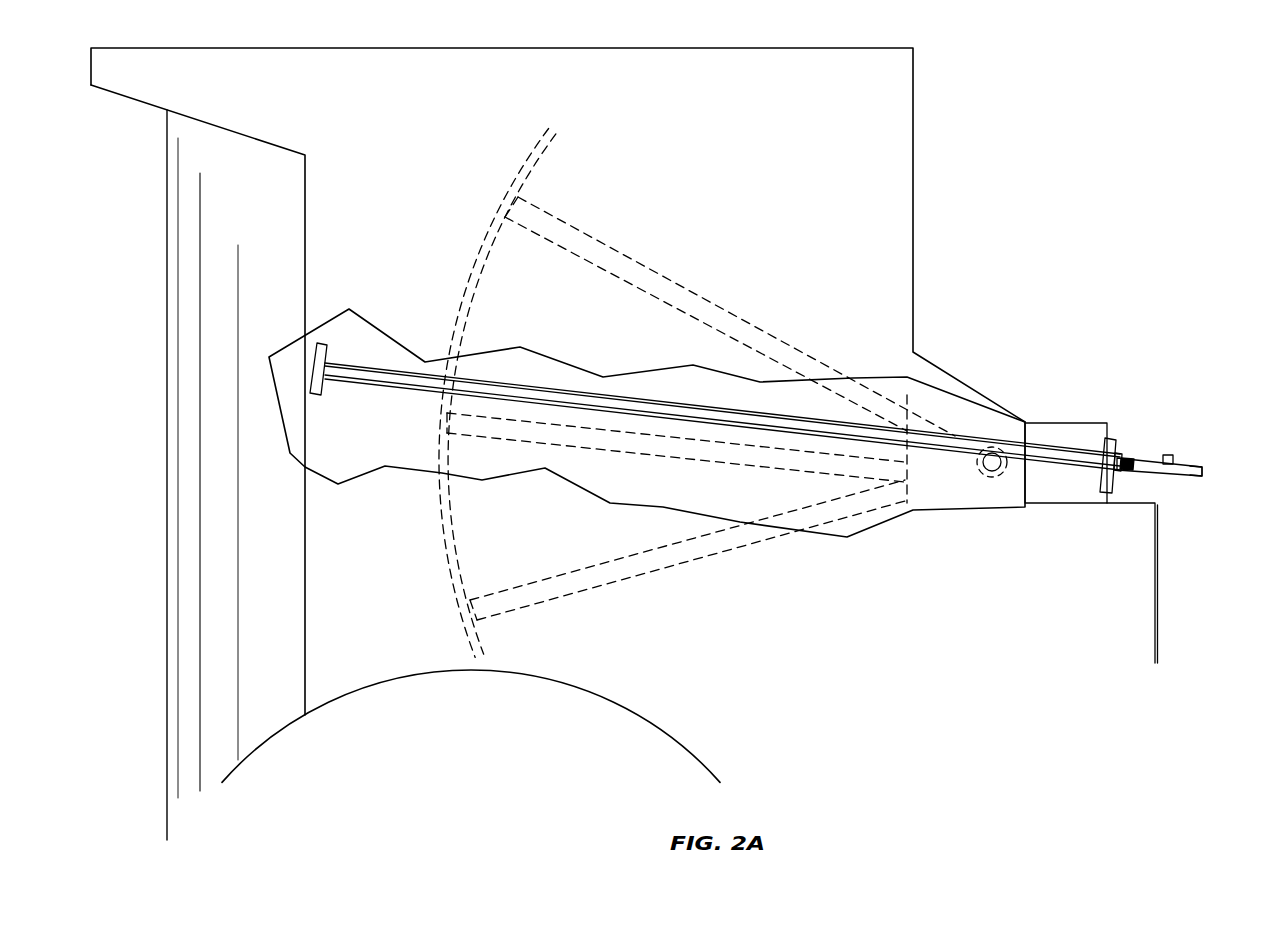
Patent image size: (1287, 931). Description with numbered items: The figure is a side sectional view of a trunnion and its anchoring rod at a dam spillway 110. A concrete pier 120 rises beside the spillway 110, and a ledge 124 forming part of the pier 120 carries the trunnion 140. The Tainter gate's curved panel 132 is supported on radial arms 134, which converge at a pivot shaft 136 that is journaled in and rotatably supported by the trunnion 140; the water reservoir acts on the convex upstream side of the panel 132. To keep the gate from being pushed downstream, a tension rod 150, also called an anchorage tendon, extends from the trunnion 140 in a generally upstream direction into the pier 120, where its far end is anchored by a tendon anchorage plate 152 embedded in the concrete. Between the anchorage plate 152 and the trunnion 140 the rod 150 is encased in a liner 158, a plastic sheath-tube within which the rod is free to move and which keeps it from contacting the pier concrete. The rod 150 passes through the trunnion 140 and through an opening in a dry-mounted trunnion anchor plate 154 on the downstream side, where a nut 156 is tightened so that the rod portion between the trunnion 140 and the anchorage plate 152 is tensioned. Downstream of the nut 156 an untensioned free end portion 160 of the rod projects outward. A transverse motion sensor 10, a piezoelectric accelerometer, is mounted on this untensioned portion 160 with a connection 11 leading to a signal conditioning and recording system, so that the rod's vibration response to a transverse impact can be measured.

The transverse motion sensor 10 is at (1178, 461).
The connection 11 is at (1173, 455).
The spillway 110 is at (695, 752).
The pier 120 is at (848, 141).
The ledge 124 is at (1137, 499).
The curved panel 132 is at (445, 300).
The radial arm 134 is at (800, 304).
The pivot shaft 136 is at (1016, 518).
The trunnion 140 is at (1087, 423).
The tension rod 150 is at (720, 415).
The tendon anchorage plate 152 is at (310, 378).
The trunnion anchor plate 154 is at (1110, 438).
The nut 156 is at (1122, 456).
The liner 158 is at (697, 422).
The untensioned end portion 160 is at (1187, 475).